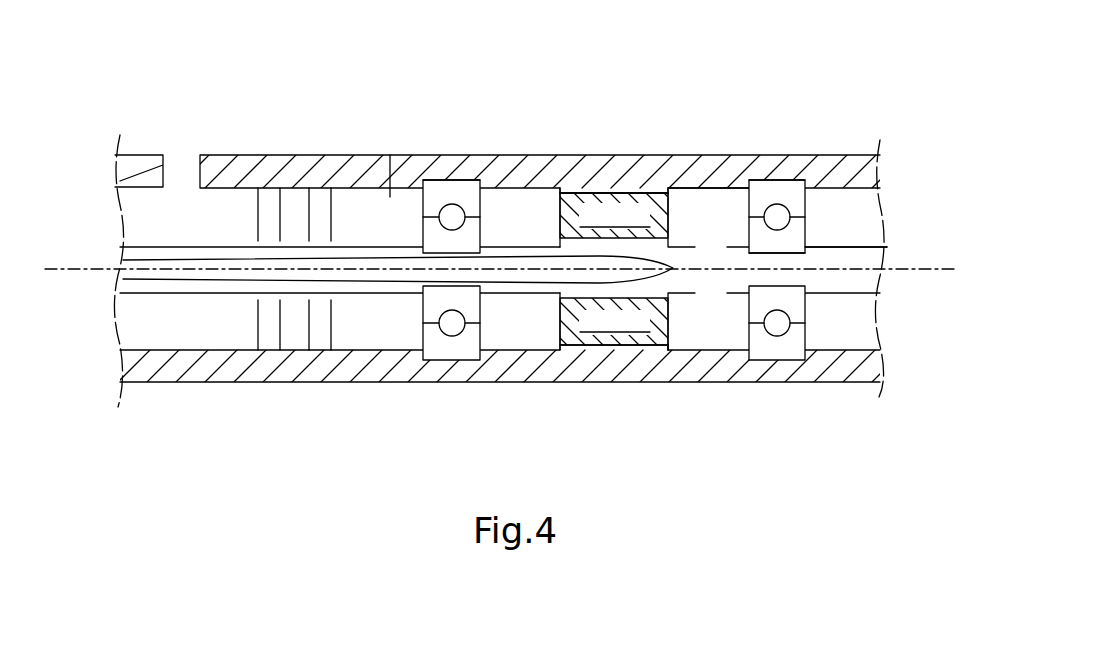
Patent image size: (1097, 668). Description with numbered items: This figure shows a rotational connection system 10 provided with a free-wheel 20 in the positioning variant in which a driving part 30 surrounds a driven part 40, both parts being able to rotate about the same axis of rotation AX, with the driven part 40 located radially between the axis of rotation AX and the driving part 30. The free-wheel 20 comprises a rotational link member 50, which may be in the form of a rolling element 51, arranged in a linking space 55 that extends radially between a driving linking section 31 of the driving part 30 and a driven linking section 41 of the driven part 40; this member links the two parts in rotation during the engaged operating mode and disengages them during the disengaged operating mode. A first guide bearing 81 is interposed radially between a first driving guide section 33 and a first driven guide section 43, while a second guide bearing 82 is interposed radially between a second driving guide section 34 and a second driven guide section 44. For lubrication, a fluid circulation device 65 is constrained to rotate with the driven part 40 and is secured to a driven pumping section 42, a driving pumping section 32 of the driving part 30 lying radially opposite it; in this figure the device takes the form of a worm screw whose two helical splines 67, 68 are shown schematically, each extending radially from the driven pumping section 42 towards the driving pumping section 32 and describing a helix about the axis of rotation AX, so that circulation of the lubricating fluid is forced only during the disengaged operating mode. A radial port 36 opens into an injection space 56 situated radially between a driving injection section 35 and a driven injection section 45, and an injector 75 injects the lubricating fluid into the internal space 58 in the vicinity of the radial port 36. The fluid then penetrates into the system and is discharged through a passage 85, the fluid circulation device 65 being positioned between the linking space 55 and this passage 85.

The rotational connection system 10 is at (858, 64).
The free-wheel 20 is at (603, 110).
The driving part 30 is at (850, 155).
The driving linking section 31 is at (635, 192).
The driving pumping section 32 is at (362, 155).
The first driving guide section 33 is at (423, 180).
The second driving guide section 34 is at (794, 180).
The driving injection section 35 is at (690, 188).
The radial port 36 is at (712, 236).
The driven part 40 is at (857, 245).
The driven linking section 41 is at (573, 245).
The driven pumping section 42 is at (224, 243).
The first driven guide section 43 is at (390, 155).
The second driven guide section 44 is at (795, 257).
The driven injection section 45 is at (683, 247).
The rotational link member 50 is at (614, 215).
The rolling element 51 is at (615, 321).
The linking space 55 is at (675, 326).
The injection space 56 is at (732, 333).
The internal space 58 is at (163, 285).
The fluid circulation device 65 is at (257, 207).
The helical spline 67 is at (262, 96).
The helical spline 68 is at (272, 208).
The injector 75 is at (657, 340).
The first guide bearing 81 is at (455, 347).
The second guide bearing 82 is at (782, 345).
The passage 85 is at (180, 173).
The axis of rotation AX is at (913, 272).